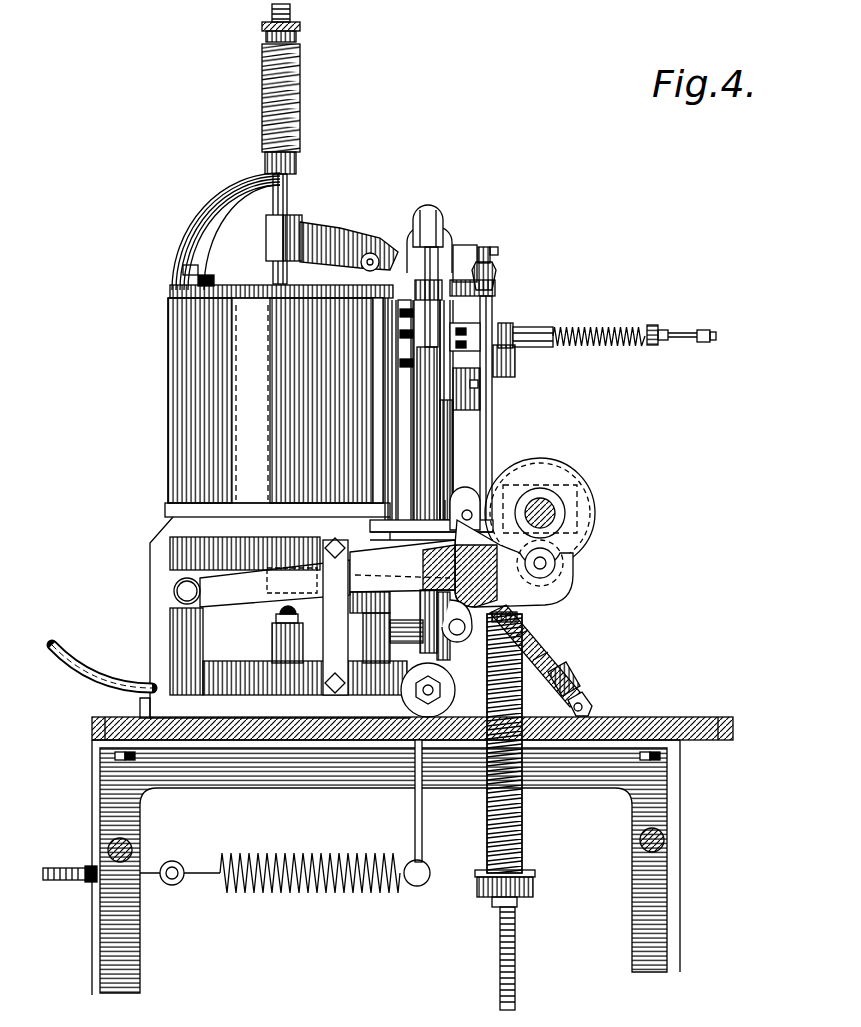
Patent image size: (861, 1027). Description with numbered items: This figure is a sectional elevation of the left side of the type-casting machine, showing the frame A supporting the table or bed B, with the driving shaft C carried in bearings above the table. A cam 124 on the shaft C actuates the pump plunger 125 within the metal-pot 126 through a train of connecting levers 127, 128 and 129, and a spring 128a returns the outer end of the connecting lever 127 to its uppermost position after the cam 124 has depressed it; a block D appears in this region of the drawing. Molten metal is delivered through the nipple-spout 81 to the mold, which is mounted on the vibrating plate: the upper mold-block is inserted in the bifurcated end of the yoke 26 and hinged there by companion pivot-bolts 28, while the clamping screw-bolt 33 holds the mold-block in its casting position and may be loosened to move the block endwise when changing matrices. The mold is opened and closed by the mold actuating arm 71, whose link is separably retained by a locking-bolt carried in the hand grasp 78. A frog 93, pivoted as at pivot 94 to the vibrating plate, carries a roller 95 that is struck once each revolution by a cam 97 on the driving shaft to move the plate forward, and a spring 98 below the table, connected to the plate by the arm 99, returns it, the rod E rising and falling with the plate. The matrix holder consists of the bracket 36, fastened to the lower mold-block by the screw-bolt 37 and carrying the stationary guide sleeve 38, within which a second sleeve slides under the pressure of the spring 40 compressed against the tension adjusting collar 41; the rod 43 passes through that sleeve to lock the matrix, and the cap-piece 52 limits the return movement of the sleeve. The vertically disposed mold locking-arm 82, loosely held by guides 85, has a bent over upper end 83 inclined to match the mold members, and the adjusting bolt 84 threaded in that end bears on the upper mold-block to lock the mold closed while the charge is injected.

The pump plunger 125 is at (289, 197).
The connecting lever 129 is at (343, 245).
The clamping screw-bolt 33 is at (416, 211).
The hand grasp 78 is at (430, 212).
The yoke 26 is at (461, 248).
The pivot-bolts 28 is at (496, 257).
The mold actuating arm 71 is at (493, 286).
The bracket 36 is at (504, 324).
The stationary guide sleeve 38 is at (552, 329).
The spring 40 is at (597, 327).
The tension adjusting collar 41 is at (652, 327).
The rod 43 is at (696, 331).
The cam 97 is at (662, 340).
The spring 98 is at (714, 337).
The block D is at (516, 361).
The screw-bolt 37 is at (478, 390).
The adjusting bolt 84 is at (400, 311).
The bent over upper end 83 is at (400, 333).
The nipple-spout 81 is at (400, 362).
The metal-pot 126 is at (277, 407).
The connecting lever 128 is at (423, 387).
The mold locking-arm 82 is at (440, 400).
The frog 93 is at (465, 500).
The roller 95 is at (450, 503).
The driving shaft C is at (548, 505).
The cam 124 is at (592, 540).
The connecting lever 127 is at (402, 566).
The cap-piece 52 is at (440, 586).
The guides 85 is at (398, 632).
The pivot 94 is at (463, 632).
The rod E is at (552, 658).
The table or bed B is at (627, 712).
The frame A is at (640, 810).
The spring 128a is at (525, 850).
The arm 99 is at (418, 788).